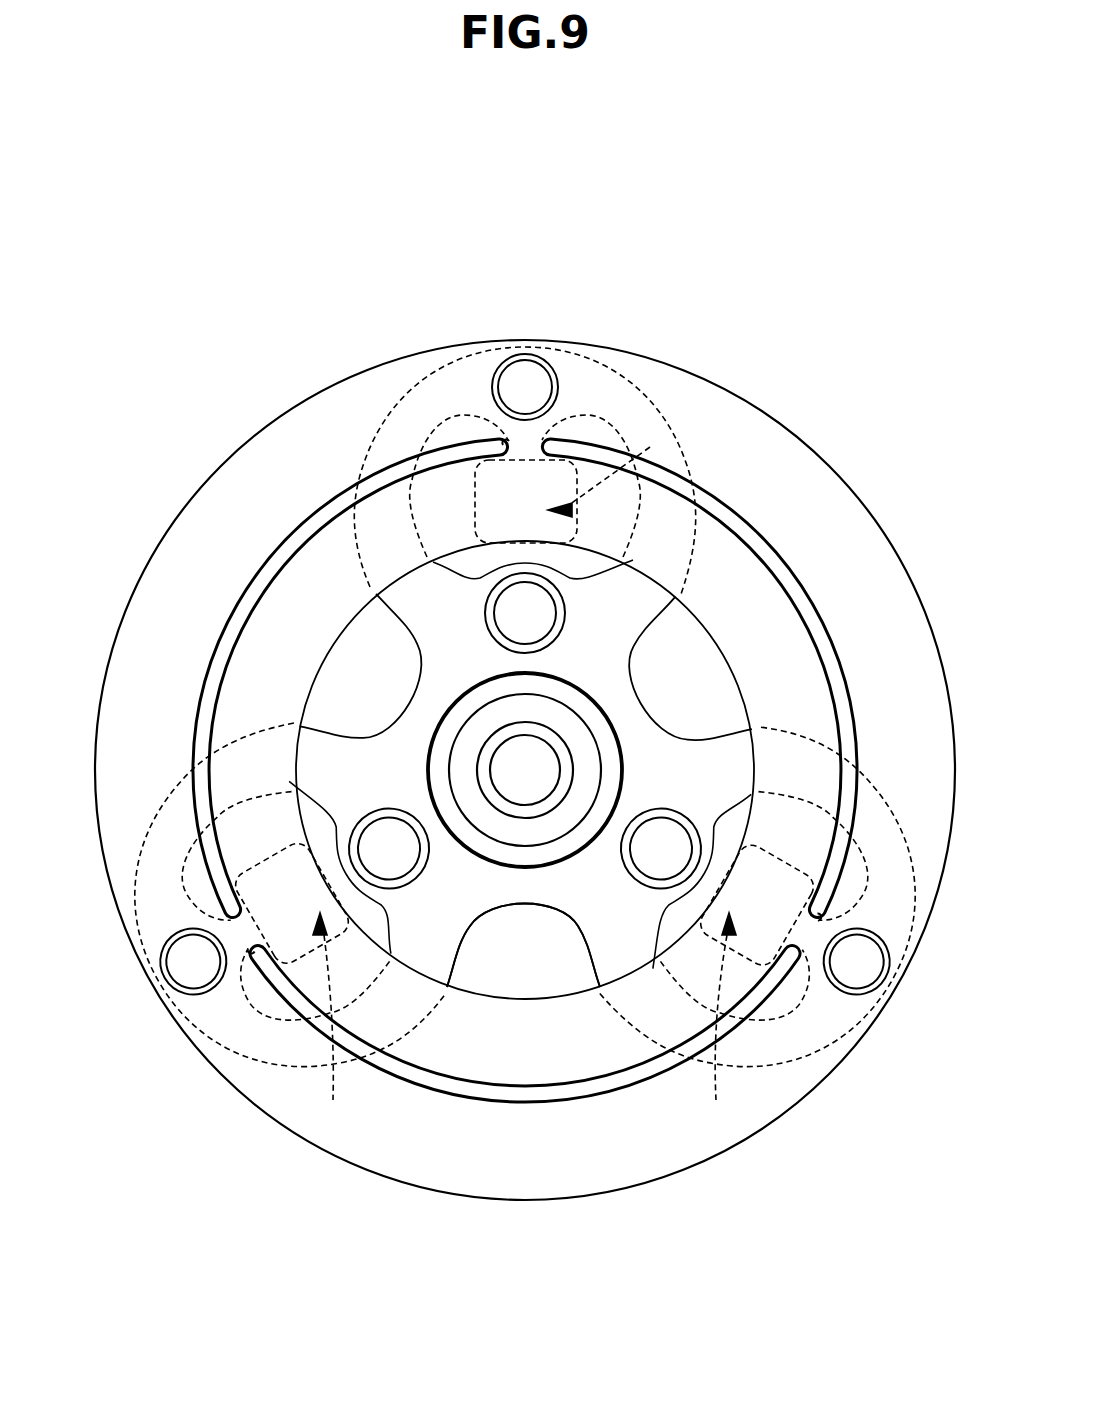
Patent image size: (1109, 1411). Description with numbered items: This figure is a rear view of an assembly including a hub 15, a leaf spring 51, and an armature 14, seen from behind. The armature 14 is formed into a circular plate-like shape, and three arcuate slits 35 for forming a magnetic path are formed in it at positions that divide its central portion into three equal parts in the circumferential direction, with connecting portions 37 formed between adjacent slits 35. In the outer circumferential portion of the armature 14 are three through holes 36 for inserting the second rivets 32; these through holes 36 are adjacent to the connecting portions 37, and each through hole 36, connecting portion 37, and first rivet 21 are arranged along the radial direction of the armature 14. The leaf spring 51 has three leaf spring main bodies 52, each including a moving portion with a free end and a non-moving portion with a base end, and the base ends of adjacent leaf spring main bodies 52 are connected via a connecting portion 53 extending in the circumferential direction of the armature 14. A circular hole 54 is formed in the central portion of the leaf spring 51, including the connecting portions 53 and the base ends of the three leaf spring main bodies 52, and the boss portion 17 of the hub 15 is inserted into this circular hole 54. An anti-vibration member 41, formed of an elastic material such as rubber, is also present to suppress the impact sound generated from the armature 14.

The armature 14 is at (365, 352).
The hub 15 is at (700, 620).
The boss portion 17 is at (612, 778).
The first rivet 21 is at (563, 623).
The second rivet 32 is at (517, 383).
The arcuate slit 35 is at (760, 545).
The through hole 36 is at (542, 388).
The connecting portion 37 is at (527, 447).
The anti-vibration member 41 is at (650, 447).
The leaf spring 51 is at (432, 703).
The leaf spring main body 52 is at (368, 446).
The connecting portion 53 is at (390, 627).
The circular hole 54 is at (463, 777).